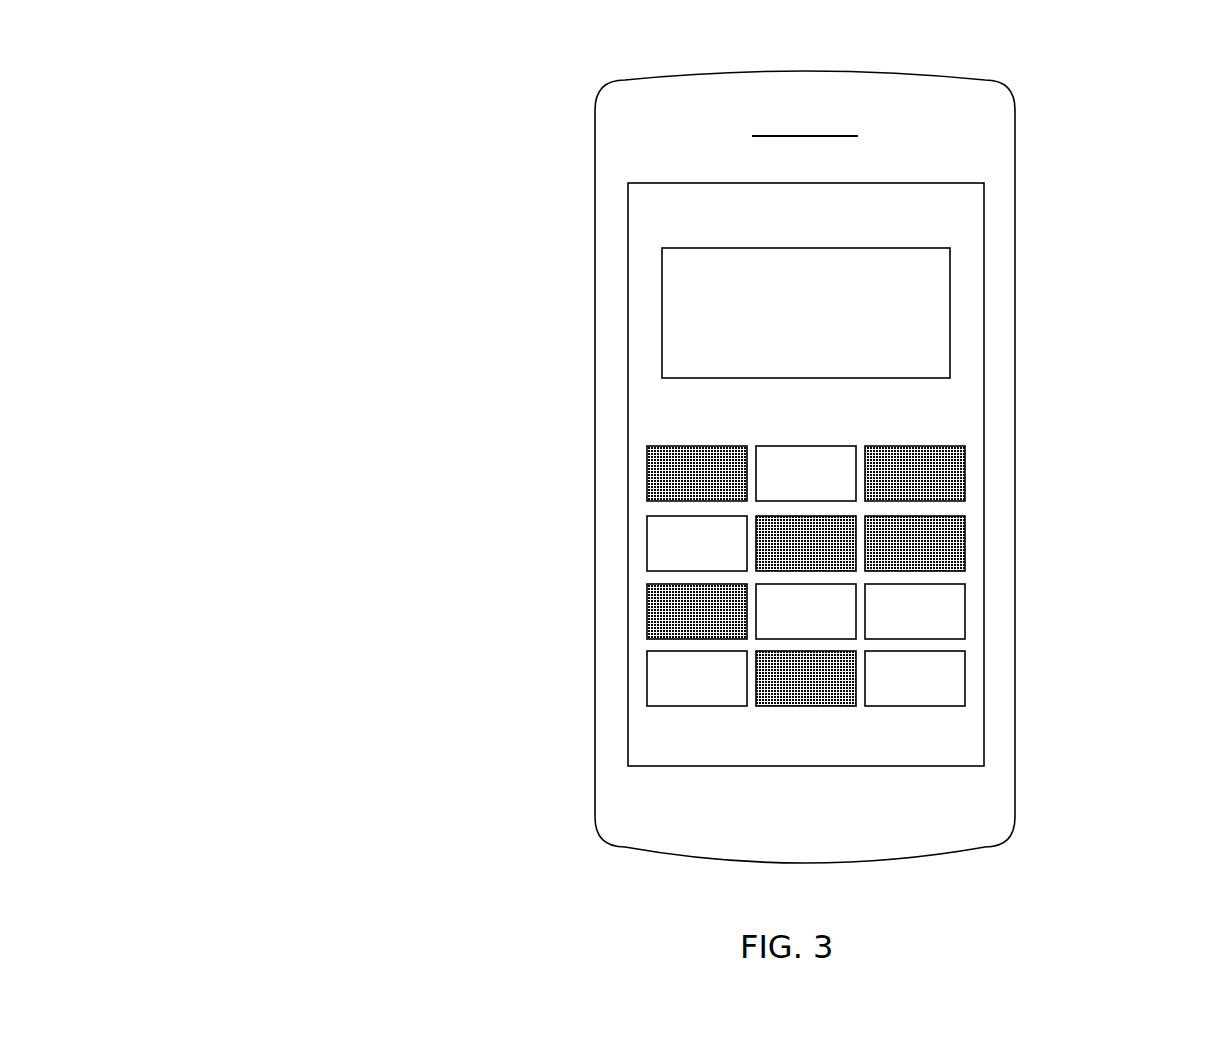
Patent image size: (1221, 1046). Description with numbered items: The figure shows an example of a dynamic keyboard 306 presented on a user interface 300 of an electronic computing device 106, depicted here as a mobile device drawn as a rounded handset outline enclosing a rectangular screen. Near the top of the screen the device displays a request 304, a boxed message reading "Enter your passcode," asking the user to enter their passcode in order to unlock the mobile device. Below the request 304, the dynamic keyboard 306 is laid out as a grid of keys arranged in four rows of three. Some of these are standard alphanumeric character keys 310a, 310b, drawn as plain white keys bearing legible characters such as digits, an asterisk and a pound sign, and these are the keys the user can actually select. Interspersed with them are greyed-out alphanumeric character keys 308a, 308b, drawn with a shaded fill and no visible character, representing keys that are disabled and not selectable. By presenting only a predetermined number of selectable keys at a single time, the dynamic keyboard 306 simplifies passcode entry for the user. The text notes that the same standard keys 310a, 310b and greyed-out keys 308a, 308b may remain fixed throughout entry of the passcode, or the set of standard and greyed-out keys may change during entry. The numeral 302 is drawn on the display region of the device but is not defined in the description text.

The electronic computing device 106 is at (328, 127).
The user interface 300 is at (645, 377).
The display screen 302 is at (963, 332).
The request 304 is at (930, 278).
The dynamic keyboard 306 is at (1052, 565).
The greyed-out alphanumeric character key 308a is at (670, 475).
The greyed-out alphanumeric character key 308b is at (670, 610).
The standard alphanumeric character key 310a is at (662, 539).
The standard alphanumeric character key 310b is at (662, 673).